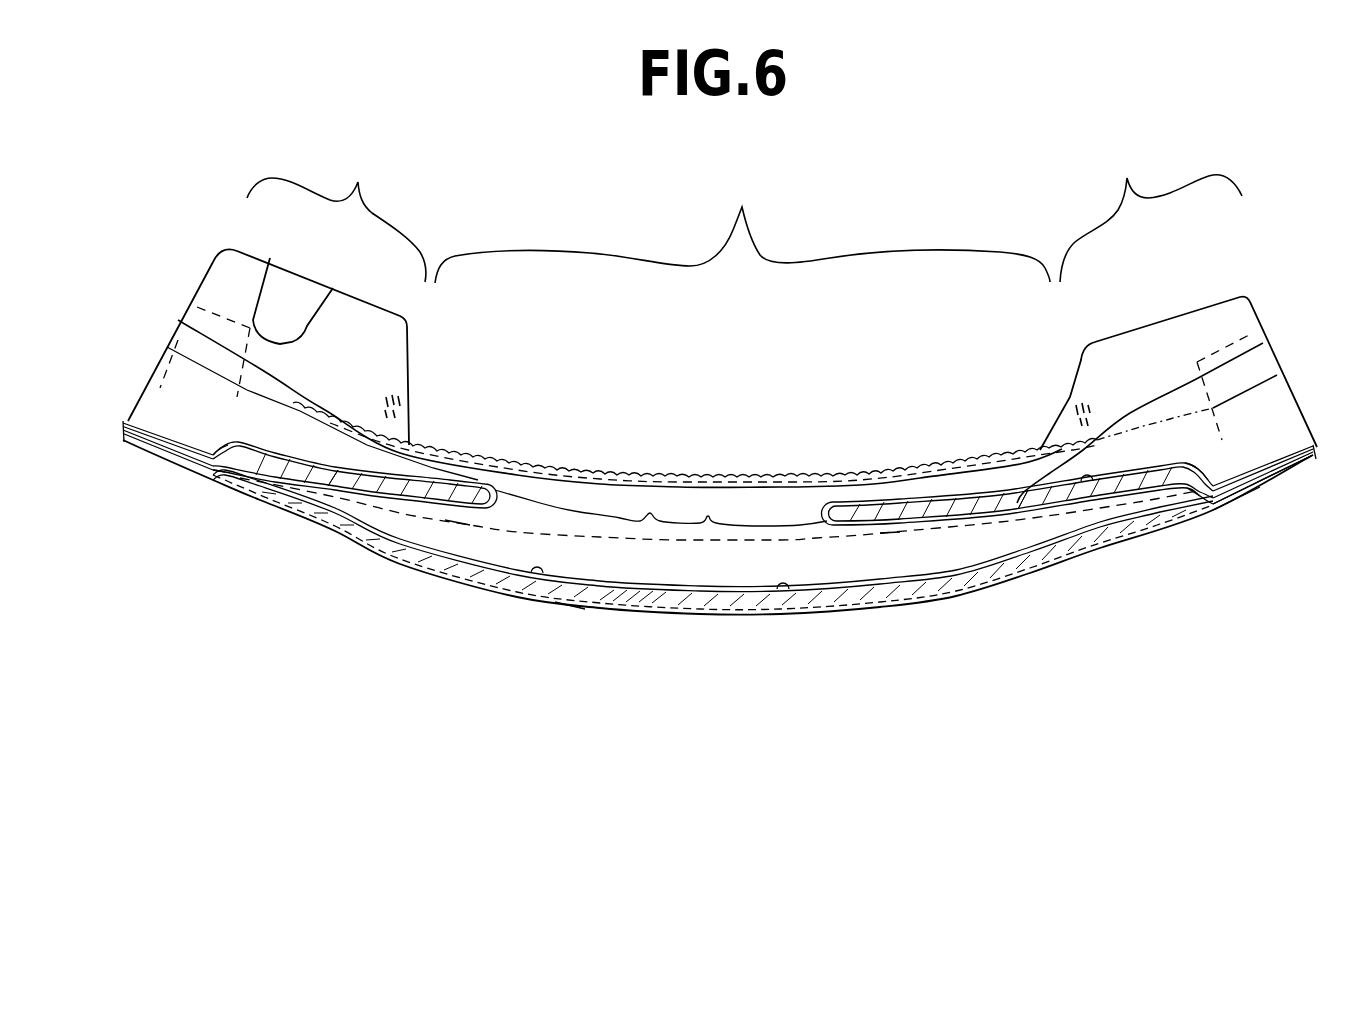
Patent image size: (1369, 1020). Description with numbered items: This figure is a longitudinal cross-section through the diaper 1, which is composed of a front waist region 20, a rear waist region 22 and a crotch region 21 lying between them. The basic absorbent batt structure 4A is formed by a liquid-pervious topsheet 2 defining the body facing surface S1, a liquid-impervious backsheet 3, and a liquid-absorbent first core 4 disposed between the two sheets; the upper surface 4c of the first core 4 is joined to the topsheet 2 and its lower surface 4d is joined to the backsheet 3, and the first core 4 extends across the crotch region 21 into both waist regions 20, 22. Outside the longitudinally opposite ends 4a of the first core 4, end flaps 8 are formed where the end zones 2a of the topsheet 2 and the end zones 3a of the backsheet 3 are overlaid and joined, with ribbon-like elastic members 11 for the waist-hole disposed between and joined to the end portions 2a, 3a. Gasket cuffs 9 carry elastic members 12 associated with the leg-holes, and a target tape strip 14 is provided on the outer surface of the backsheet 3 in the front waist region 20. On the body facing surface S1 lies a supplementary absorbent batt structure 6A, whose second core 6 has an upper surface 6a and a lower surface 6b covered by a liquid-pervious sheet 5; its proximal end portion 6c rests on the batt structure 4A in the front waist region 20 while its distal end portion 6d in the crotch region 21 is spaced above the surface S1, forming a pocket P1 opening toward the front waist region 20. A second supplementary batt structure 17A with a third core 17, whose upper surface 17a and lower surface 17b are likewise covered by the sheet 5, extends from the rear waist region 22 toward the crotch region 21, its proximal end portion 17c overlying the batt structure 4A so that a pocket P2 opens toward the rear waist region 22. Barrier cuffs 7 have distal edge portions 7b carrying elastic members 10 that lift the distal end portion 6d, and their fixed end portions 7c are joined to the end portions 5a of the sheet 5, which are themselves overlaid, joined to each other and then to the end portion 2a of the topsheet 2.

The diaper 1 is at (478, 480).
The topsheet 2 is at (789, 598).
The end zones of the topsheet 2a is at (190, 468).
The backsheet 3 is at (728, 613).
The end zones of the backsheet 3a is at (140, 437).
The first core 4 is at (890, 609).
The ends of the first core 4a is at (1202, 510).
The upper surface of the first core 4c is at (674, 610).
The lower surface of the first core 4d is at (643, 611).
The basic absorbent batt structure 4A is at (567, 623).
The liquid-pervious sheet 5 is at (365, 500).
The end portions of the liquid-pervious sheet 5a is at (140, 418).
The second core 6 is at (972, 520).
The upper surface of the second core 6a is at (1099, 503).
The lower surface of the second core 6b is at (1010, 512).
The proximal end portion of the batt structure 6c is at (1184, 470).
The distal end portion of the batt structure 6d is at (822, 500).
The supplementary absorbent batt structure 6A is at (1029, 547).
The barrier cuffs 7 is at (672, 503).
The distal edge portions of the barrier cuffs 7b is at (742, 494).
The fixed end portions of the barrier cuffs 7c is at (182, 337).
The end flaps 8 is at (212, 422).
The gasket cuffs 9 is at (1083, 430).
The elastic members 10 is at (560, 462).
The elastic members 11 is at (163, 447).
The elastic members 12 is at (405, 396).
The target tape strip 14 is at (1158, 536).
The third core 17 is at (312, 508).
The upper surface of the third core 17a is at (291, 462).
The lower surface of the third core 17b is at (434, 503).
The proximal end portion of the batt structure 17c is at (232, 480).
The supplementary absorbent batt structure 17A is at (349, 517).
The front waist region 20 is at (1151, 210).
The crotch region 21 is at (742, 225).
The rear waist region 22 is at (336, 215).
The pocket P1 is at (878, 555).
The pocket P2 is at (483, 545).
The body facing surface S1 is at (534, 578).